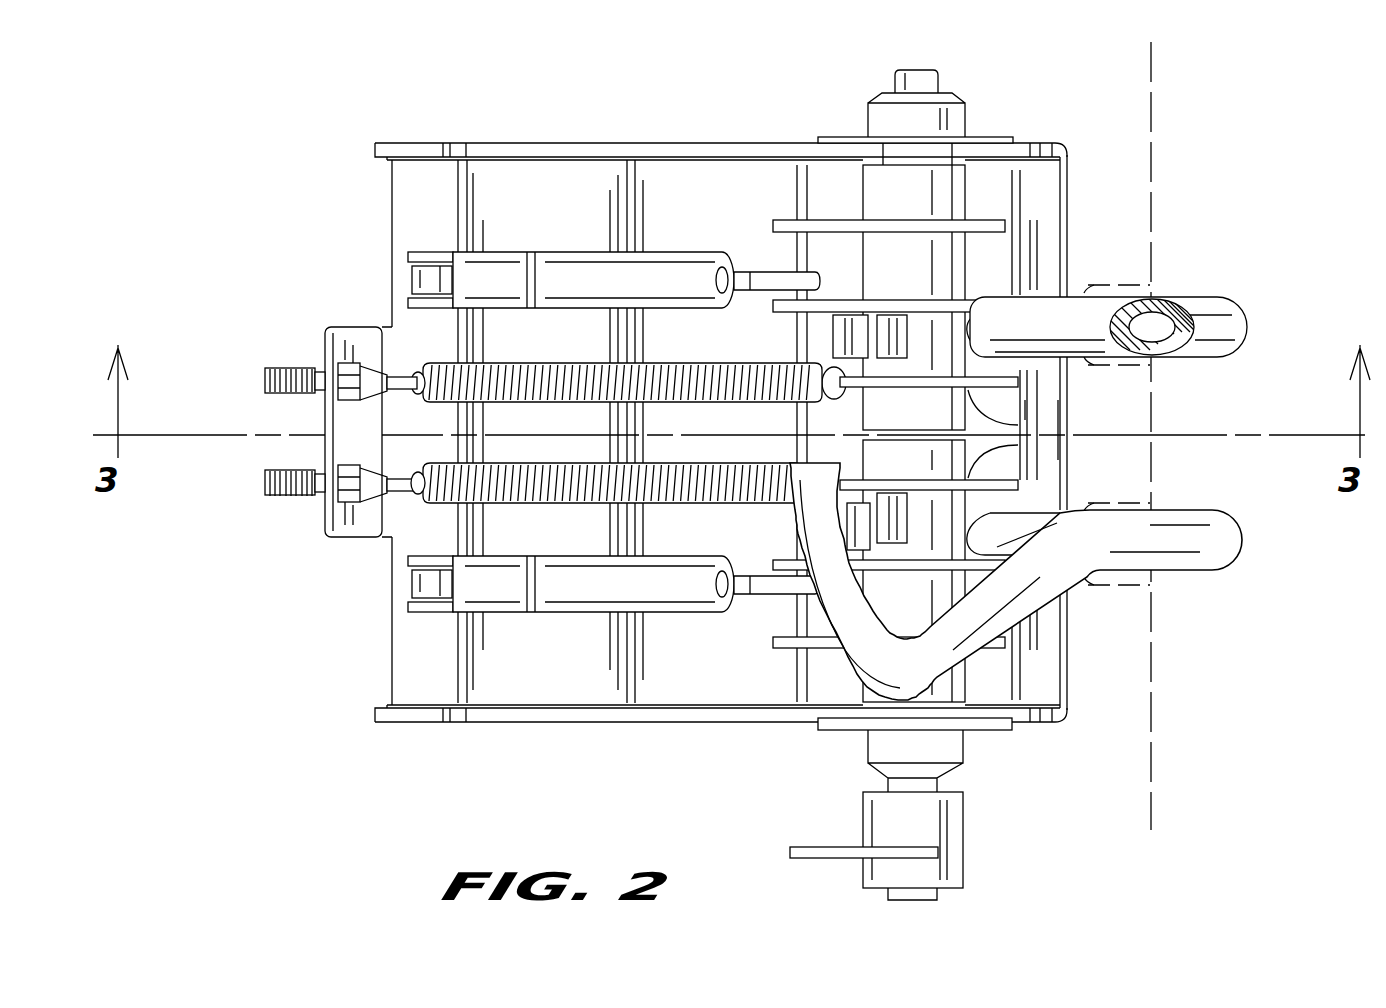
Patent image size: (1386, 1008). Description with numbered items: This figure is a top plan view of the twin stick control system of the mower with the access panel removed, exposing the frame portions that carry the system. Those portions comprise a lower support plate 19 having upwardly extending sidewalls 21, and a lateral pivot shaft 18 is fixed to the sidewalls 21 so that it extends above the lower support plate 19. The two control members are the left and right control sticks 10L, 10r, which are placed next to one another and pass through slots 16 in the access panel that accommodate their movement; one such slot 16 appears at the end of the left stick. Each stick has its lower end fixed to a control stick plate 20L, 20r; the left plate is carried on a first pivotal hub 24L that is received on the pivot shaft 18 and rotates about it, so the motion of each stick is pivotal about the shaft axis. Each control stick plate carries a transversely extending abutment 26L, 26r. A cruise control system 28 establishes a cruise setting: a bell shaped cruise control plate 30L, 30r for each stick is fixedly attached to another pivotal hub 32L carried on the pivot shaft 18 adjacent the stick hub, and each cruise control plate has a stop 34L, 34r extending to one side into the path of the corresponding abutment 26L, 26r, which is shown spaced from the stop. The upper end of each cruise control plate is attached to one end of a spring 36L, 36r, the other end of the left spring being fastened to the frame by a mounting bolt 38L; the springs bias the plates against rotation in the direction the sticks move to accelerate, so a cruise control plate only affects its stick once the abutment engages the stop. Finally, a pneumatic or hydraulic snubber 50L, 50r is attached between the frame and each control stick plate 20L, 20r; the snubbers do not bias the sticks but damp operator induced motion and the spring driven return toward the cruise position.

The control stick 10L is at (1147, 290).
The control stick 10r is at (1200, 578).
The slot 16 is at (1142, 287).
The lateral pivot shaft 18 is at (913, 710).
The lower support plate 19 is at (680, 672).
The control stick plate 20L is at (1005, 300).
The control stick plate 20r is at (947, 563).
The sidewall 21 is at (640, 150).
The first pivotal hub 24L is at (920, 262).
The abutment 26L is at (833, 335).
The abutment 26r is at (860, 532).
The cruise control system 28 is at (1033, 396).
The cruise control plate 30L is at (1003, 430).
The cruise control plate 30r is at (980, 480).
The pivotal hub 32L is at (880, 412).
The stop 34L is at (962, 293).
The stop 34r is at (962, 513).
The spring 36L is at (590, 365).
The spring 36r is at (430, 500).
The mounting bolt 38L is at (290, 370).
The snubber 50L is at (577, 268).
The snubber 50r is at (595, 600).